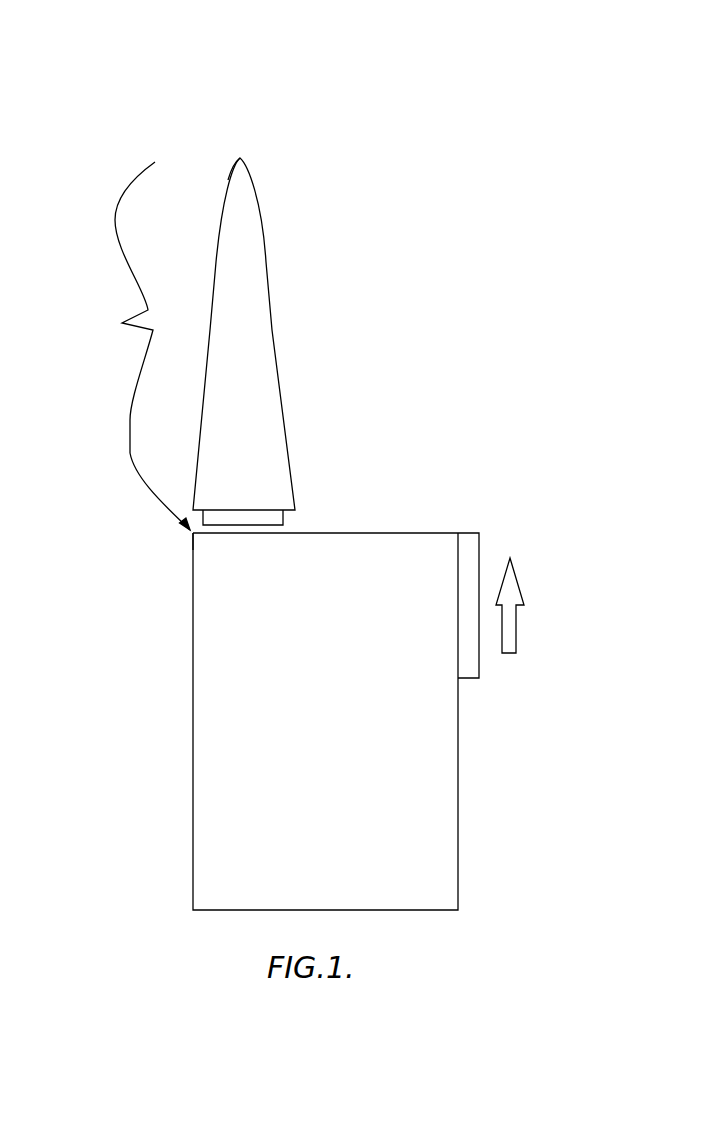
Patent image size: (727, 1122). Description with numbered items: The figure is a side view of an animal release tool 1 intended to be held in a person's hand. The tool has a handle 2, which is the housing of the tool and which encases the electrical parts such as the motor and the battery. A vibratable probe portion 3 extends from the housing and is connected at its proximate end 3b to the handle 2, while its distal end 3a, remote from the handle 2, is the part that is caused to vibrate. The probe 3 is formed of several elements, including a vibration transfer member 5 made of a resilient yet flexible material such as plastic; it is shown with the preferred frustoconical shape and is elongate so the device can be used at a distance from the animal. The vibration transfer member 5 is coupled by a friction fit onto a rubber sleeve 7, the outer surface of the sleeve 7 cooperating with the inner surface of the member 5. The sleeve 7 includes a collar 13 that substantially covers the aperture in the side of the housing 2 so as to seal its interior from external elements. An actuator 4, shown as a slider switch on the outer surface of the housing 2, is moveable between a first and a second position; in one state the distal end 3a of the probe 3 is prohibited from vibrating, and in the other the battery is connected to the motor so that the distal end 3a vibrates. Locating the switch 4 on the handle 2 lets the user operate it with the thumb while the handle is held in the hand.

The animal release tool 1 is at (518, 317).
The handle 2 is at (215, 720).
The vibratable probe portion 3 is at (136, 346).
The distal end of the probe 3a is at (217, 143).
The proximate end of the probe 3b is at (195, 533).
The actuator 4 is at (479, 562).
The vibration transfer member 5 is at (267, 273).
The sleeve 7 is at (262, 520).
The collar 13 is at (287, 528).